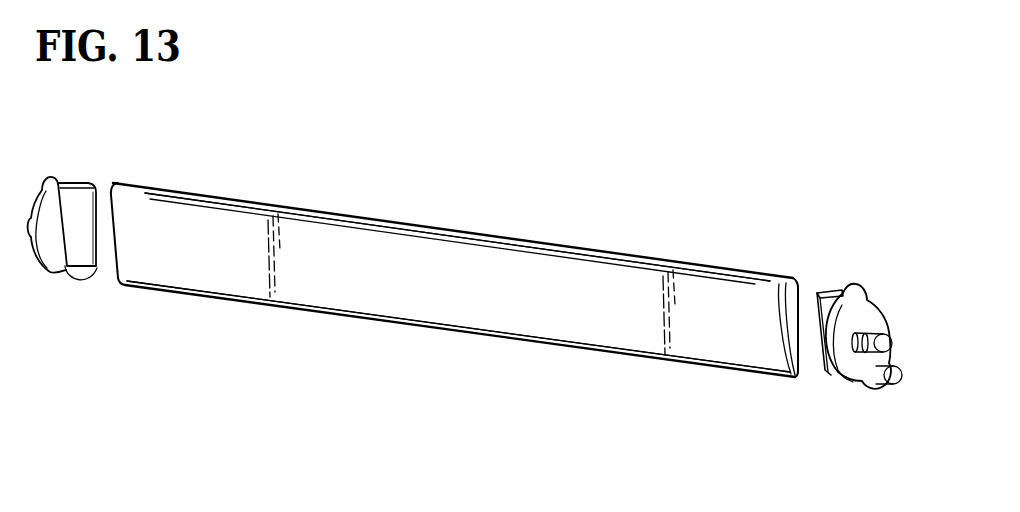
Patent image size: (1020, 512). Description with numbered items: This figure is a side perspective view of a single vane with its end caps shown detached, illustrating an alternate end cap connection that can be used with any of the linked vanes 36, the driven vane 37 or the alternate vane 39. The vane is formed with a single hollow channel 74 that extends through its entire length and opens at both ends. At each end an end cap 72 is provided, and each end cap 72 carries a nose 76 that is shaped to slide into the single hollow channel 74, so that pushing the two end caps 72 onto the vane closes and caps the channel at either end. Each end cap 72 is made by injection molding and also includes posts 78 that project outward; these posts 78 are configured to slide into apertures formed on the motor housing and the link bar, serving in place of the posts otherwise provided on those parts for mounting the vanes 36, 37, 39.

The linked vane 36 is at (430, 258).
The driven vane 37 is at (457, 237).
The alternate vane 39 is at (458, 326).
The end cap 72 is at (60, 168).
The single hollow channel 74 is at (790, 297).
The nose 76 is at (73, 185).
The posts 78 is at (872, 341).